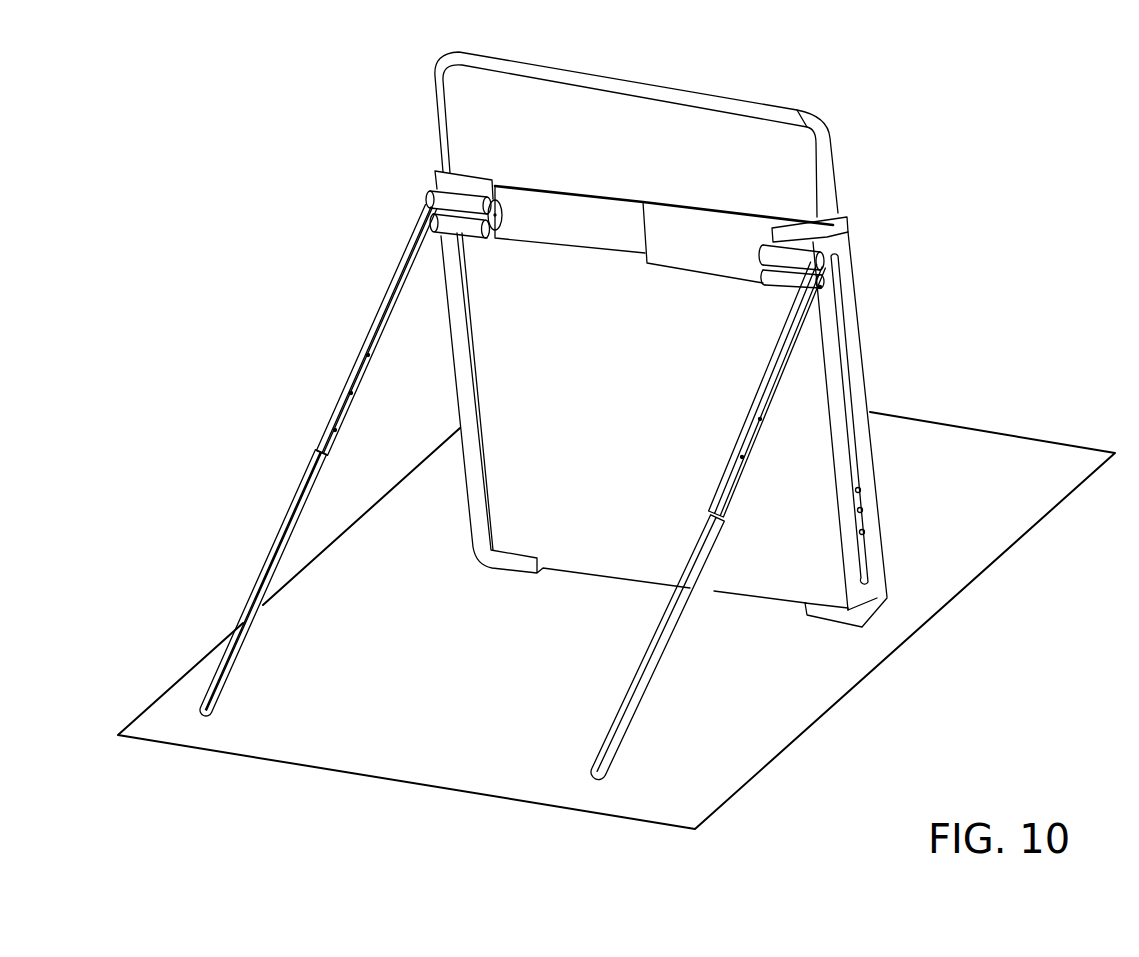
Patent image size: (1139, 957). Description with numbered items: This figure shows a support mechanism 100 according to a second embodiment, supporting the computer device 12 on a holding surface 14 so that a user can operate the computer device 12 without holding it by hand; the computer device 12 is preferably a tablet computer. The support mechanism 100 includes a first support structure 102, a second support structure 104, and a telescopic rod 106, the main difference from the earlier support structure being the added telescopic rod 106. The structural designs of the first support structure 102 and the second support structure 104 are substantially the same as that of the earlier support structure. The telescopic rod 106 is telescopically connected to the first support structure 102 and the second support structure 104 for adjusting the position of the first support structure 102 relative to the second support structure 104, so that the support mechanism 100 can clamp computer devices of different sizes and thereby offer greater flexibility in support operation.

The computer device 12 is at (753, 108).
The holding surface 14 is at (1027, 453).
The support mechanism 100 is at (605, 469).
The first support structure 102 is at (796, 364).
The second support structure 104 is at (507, 182).
The telescopic rod 106 is at (750, 231).